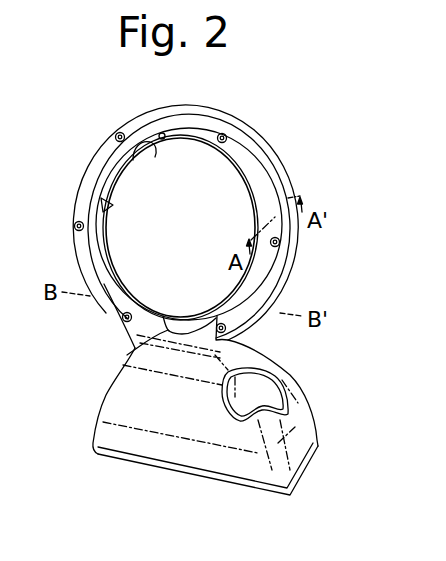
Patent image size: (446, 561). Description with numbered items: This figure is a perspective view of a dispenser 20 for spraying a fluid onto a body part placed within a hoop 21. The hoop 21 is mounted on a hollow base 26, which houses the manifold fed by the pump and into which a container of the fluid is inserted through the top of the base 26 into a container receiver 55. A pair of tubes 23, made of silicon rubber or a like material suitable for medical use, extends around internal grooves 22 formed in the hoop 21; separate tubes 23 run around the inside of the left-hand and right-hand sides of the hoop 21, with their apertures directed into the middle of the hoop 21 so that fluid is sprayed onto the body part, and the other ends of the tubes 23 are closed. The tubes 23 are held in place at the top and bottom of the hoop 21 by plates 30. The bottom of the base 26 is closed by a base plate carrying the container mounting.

The dispenser 20 is at (100, 312).
The hoop 21 is at (253, 166).
The internal grooves 22 is at (101, 207).
The tubes 23 is at (110, 259).
The hollow base 26 is at (147, 415).
The plates 30 is at (131, 153).
The container receiver 55 is at (250, 398).